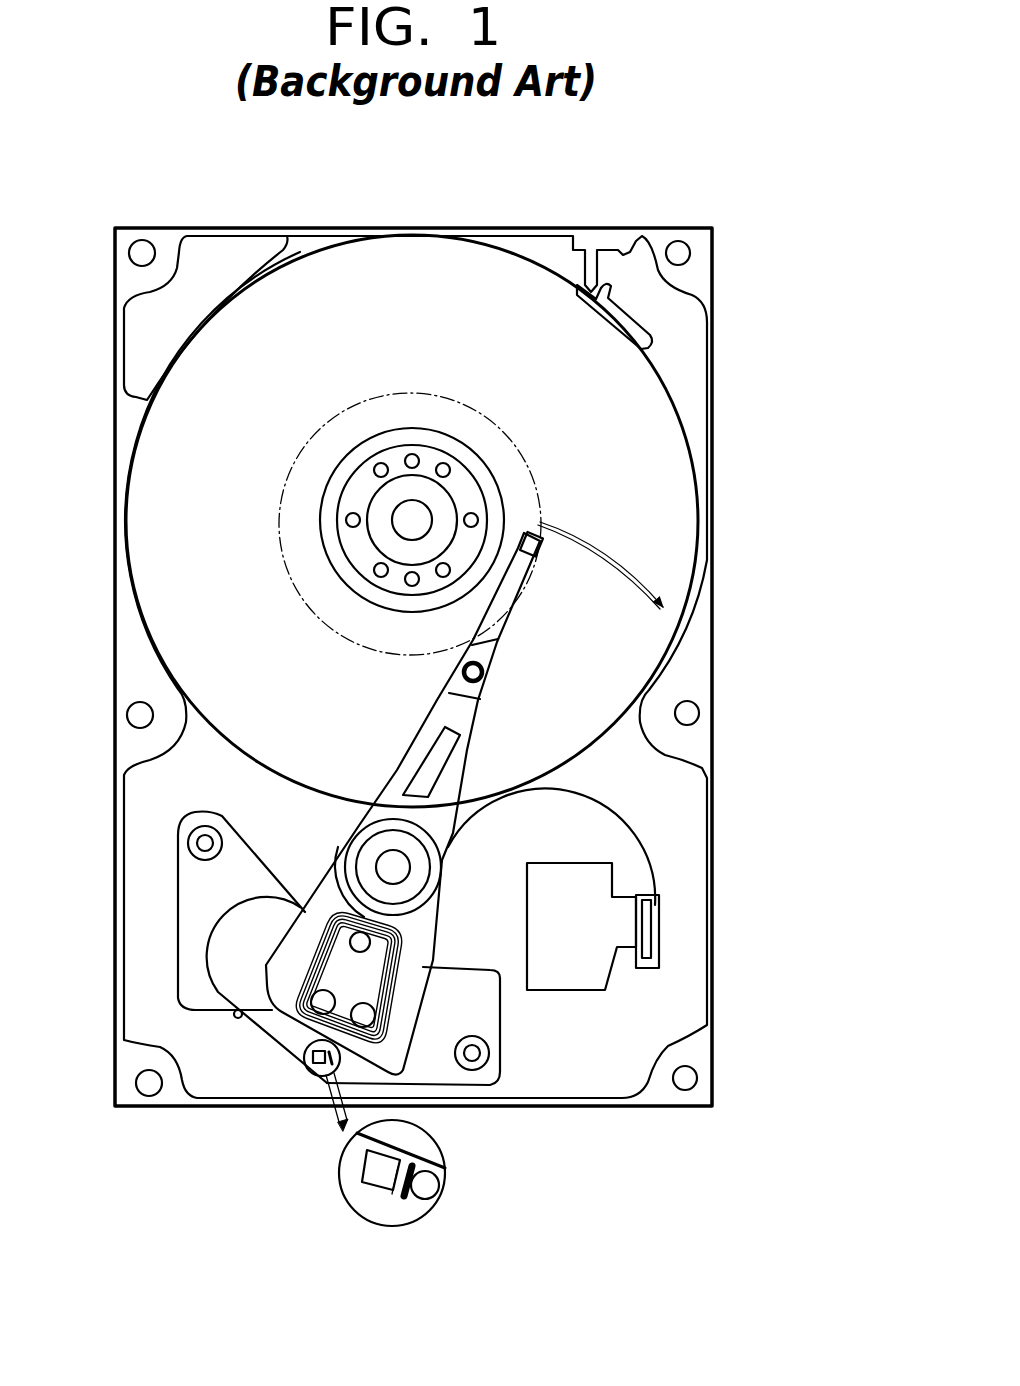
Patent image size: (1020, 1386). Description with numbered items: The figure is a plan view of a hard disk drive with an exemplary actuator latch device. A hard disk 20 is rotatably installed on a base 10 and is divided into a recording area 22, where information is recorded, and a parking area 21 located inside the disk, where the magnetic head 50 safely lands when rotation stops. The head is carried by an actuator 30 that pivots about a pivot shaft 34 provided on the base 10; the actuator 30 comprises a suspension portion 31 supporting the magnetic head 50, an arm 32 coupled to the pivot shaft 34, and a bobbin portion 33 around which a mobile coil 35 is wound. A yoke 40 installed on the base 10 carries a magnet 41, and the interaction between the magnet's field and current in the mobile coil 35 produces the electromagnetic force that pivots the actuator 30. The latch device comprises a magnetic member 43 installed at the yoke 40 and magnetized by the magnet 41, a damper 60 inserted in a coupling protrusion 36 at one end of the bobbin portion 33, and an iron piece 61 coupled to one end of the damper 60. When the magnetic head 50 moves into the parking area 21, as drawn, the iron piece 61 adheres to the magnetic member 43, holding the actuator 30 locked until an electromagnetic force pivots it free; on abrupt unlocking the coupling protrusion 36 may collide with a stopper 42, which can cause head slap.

The base 10 is at (700, 192).
The hard disk 20 is at (672, 400).
The parking area 21 is at (320, 523).
The recording area 22 is at (282, 523).
The actuator 30 is at (464, 835).
The suspension portion 31 is at (498, 642).
The arm 32 is at (467, 750).
The bobbin portion 33 is at (428, 937).
The pivot shaft 34 is at (387, 858).
The mobile coil 35 is at (330, 917).
The coupling protrusion 36 is at (370, 1172).
The yoke 40 is at (168, 880).
The magnet 41 is at (203, 940).
The stopper 42 is at (232, 1014).
The magnetic member 43 is at (435, 1185).
The magnetic head 50 is at (545, 548).
The damper 60 is at (395, 1188).
The iron piece 61 is at (405, 1197).